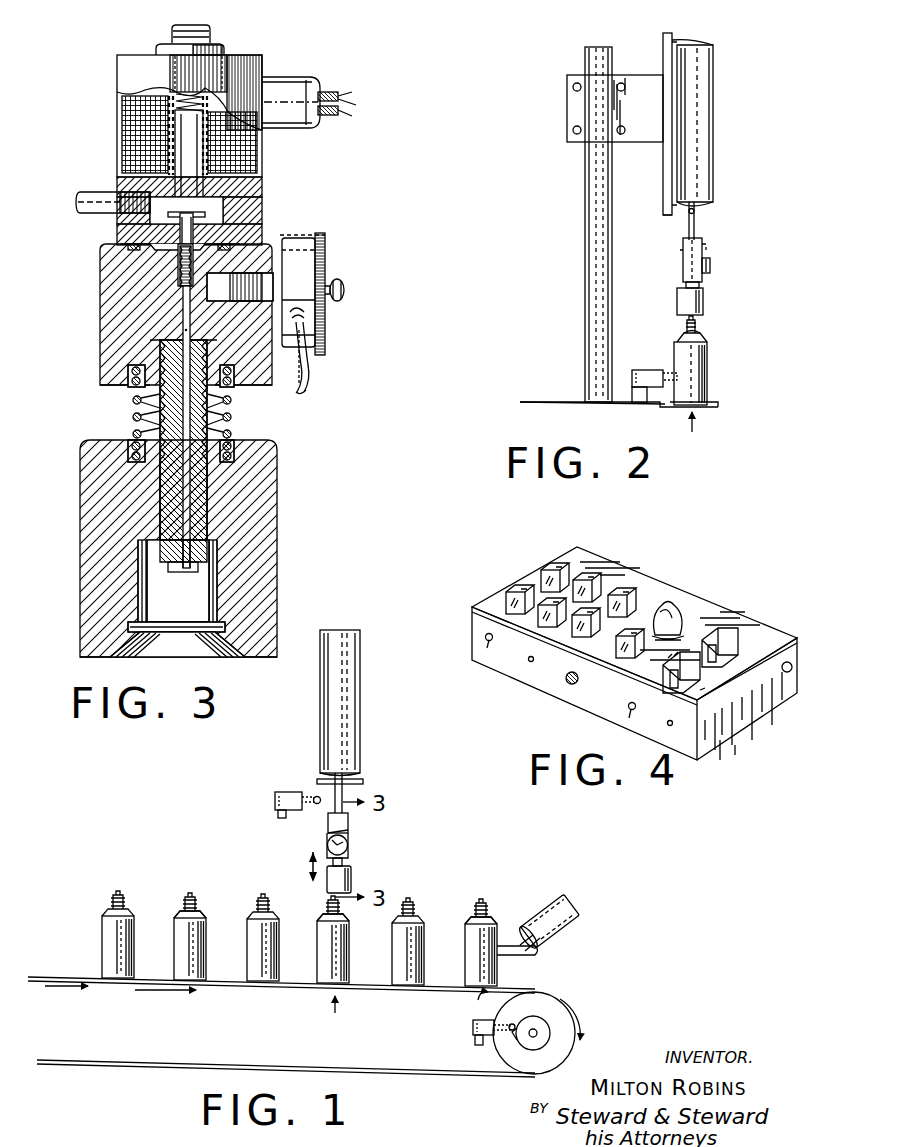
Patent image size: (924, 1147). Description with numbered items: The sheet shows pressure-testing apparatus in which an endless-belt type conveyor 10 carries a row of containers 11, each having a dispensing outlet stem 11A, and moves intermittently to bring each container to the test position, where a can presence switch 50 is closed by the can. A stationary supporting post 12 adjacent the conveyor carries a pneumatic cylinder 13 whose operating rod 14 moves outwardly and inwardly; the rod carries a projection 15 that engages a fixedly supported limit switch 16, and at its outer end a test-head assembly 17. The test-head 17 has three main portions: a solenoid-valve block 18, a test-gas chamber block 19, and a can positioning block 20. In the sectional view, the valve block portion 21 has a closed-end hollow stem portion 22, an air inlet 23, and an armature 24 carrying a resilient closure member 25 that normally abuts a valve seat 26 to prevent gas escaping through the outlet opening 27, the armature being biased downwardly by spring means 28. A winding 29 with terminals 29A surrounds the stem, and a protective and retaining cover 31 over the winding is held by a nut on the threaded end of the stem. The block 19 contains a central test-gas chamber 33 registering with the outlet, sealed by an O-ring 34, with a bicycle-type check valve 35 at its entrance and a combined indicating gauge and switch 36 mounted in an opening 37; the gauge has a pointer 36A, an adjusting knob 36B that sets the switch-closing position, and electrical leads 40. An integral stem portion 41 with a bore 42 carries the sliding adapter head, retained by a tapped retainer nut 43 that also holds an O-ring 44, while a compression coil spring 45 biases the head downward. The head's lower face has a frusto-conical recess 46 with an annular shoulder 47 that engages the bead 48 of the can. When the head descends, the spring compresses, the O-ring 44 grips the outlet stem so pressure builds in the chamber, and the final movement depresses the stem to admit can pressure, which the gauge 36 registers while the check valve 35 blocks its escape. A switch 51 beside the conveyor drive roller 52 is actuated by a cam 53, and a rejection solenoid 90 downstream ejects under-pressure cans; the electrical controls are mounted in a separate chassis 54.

In FIG. 2, the endless-belt type conveyor 10 is at (718, 406).
In FIG. 1, the endless-belt type conveyor 10 is at (62, 977).
In FIG. 2, the container 11 is at (707, 371).
In FIG. 1, the container 11 is at (102, 926).
In FIG. 2, the dispensing outlet stem 11A is at (696, 326).
In FIG. 1, the dispensing outlet stem 11A is at (188, 903).
In FIG. 2, the stationary supporting post 12 is at (585, 314).
In FIG. 2, the pneumatic cylinder 13 is at (713, 166).
In FIG. 1, the pneumatic cylinder 13 is at (360, 715).
In FIG. 2, the operating rod 14 is at (695, 213).
In FIG. 1, the operating rod 14 is at (335, 796).
In FIG. 2, the projection 15 is at (690, 210).
In FIG. 1, the projection 15 is at (363, 781).
In FIG. 1, the limit switch 16 is at (275, 802).
In FIG. 3, the test-head assembly 17 is at (96, 347).
In FIG. 2, the test-head assembly 17 is at (683, 278).
In FIG. 1, the test-head assembly 17 is at (350, 860).
In FIG. 3, the solenoid-valve block 18 is at (117, 128).
In FIG. 3, the test-gas chamber block 19 is at (100, 300).
In FIG. 3, the can positioning block 20 is at (80, 545).
In FIG. 3, the valve block portion 21 is at (262, 186).
In FIG. 3, the closed-end hollow stem portion 22 is at (172, 27).
In FIG. 3, the air inlet 23 is at (78, 202).
In FIG. 3, the armature 24 is at (162, 212).
In FIG. 3, the resilient closure member 25 is at (205, 214).
In FIG. 3, the valve seat 26 is at (262, 228).
In FIG. 3, the outlet opening 27 is at (182, 230).
In FIG. 3, the spring means 28 is at (205, 68).
In FIG. 3, the winding 29 is at (126, 106).
In FIG. 3, the terminals 29A is at (352, 104).
In FIG. 3, the protective and retaining cover 31 is at (117, 69).
In FIG. 3, the test-gas chamber 33 is at (183, 322).
In FIG. 3, the O-ring 34 is at (134, 247).
In FIG. 3, the check valve 35 is at (178, 270).
In FIG. 3, the combined indicating gauge and switch 36 is at (315, 322).
In FIG. 2, the combined indicating gauge and switch 36 is at (710, 267).
In FIG. 1, the combined indicating gauge and switch 36 is at (348, 823).
In FIG. 1, the pointer 36A is at (348, 846).
In FIG. 3, the knob 36B is at (345, 288).
In FIG. 3, the opening 37 is at (212, 300).
In FIG. 3, the electrical leads 40 is at (306, 380).
In FIG. 3, the stem portion 41 is at (160, 401).
In FIG. 3, the bore 42 is at (180, 432).
In FIG. 3, the tapped retainer nut 43 is at (184, 574).
In FIG. 3, the O-ring 44 is at (186, 582).
In FIG. 3, the compression coil spring 45 is at (233, 411).
In FIG. 3, the frusto-conical recess 46 is at (165, 650).
In FIG. 3, the annular shoulder 47 is at (218, 630).
In FIG. 2, the bead 48 is at (685, 332).
In FIG. 1, the bead 48 is at (203, 912).
In FIG. 2, the can presence switch 50 is at (648, 370).
In FIG. 1, the switch 51 is at (473, 1032).
In FIG. 1, the conveyor drive roller 52 is at (556, 1008).
In FIG. 1, the cam 53 is at (522, 1047).
In FIG. 4, the chassis 54 is at (490, 603).
In FIG. 1, the rejection solenoid 90 is at (575, 905).